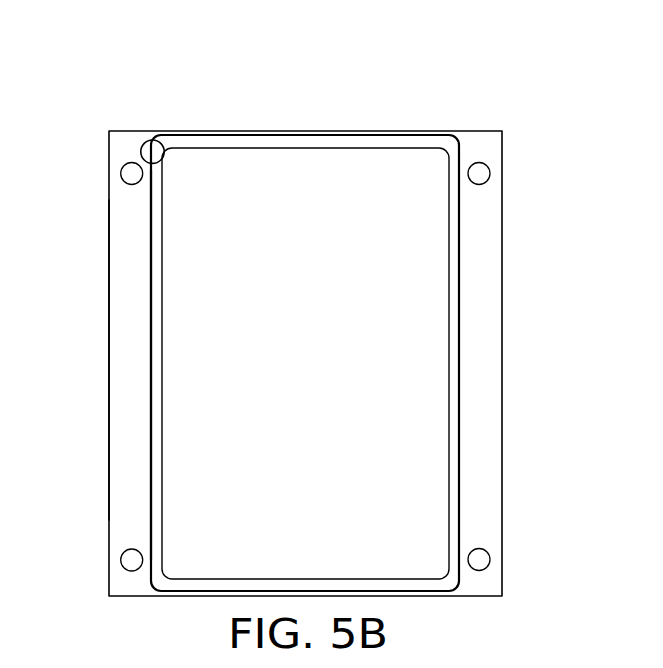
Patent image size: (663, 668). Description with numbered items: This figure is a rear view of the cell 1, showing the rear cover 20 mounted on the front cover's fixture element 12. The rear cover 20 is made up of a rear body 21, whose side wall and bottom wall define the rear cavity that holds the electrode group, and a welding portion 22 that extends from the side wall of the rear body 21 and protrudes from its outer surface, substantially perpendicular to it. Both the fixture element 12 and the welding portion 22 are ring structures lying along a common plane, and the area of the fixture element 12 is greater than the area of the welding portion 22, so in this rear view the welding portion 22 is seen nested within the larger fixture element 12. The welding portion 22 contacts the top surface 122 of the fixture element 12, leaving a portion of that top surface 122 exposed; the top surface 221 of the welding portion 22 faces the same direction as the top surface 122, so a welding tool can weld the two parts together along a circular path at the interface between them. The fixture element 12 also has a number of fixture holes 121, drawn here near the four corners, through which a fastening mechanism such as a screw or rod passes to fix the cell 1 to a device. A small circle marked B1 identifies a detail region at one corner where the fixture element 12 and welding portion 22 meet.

The cell 1 is at (550, 47).
The fixture element 12 is at (104, 253).
The fixture holes 121 is at (130, 175).
The top surface 122 is at (128, 330).
The rear cover 20 is at (318, 74).
The rear body 21 is at (409, 182).
The welding portion 22 is at (332, 134).
The top surface 221 is at (157, 407).
The enlarged region B1 is at (150, 152).